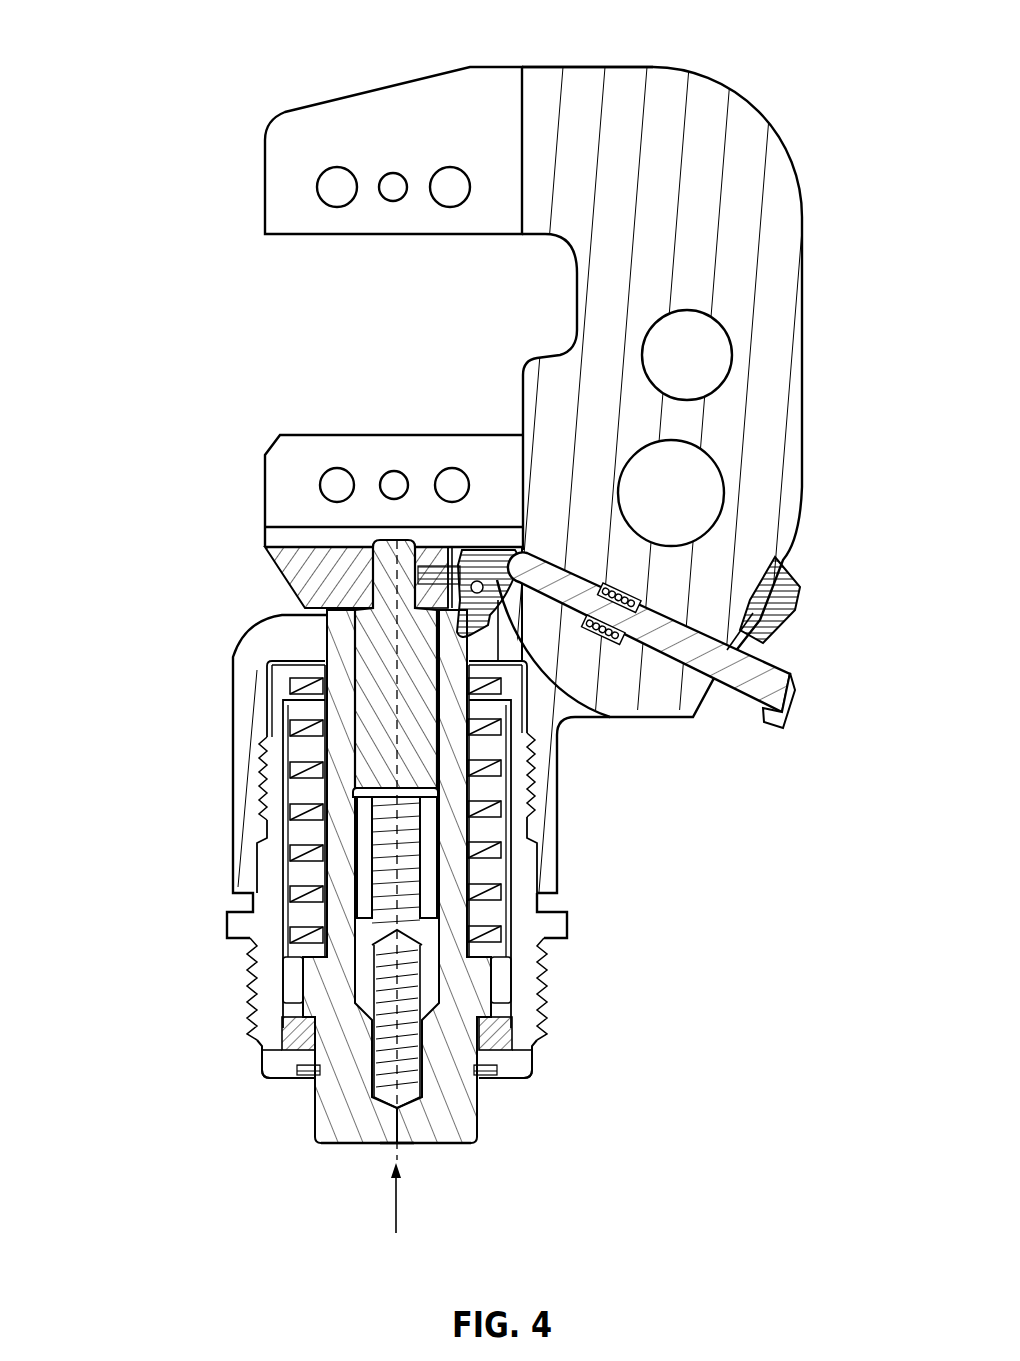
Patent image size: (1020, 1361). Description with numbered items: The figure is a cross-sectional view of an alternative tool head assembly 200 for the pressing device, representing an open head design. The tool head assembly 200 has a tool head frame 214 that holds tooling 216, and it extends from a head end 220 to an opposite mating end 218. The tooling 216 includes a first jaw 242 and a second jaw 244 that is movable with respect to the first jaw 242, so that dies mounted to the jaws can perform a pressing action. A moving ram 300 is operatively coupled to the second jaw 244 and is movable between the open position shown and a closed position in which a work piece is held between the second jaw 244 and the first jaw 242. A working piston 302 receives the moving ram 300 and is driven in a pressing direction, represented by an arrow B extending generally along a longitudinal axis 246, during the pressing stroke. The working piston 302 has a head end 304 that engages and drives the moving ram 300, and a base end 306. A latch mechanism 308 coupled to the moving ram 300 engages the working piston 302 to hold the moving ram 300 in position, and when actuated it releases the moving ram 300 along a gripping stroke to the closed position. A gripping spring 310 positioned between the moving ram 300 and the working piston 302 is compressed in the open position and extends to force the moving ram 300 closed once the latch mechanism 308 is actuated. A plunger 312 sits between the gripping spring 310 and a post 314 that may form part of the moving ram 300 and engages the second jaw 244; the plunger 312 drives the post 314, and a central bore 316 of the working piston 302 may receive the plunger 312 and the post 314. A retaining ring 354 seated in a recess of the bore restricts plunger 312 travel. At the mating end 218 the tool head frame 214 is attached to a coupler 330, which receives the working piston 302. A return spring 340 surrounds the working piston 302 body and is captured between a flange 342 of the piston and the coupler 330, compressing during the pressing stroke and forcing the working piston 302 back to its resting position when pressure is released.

The tool head assembly 200 is at (178, 97).
The tooling 216 is at (283, 62).
The head end 220 is at (618, 65).
The tool head frame 214 is at (748, 145).
The first jaw 242 is at (270, 213).
The second jaw 244 is at (275, 477).
The head end 304 is at (305, 590).
The post 314 is at (355, 630).
The moving ram 300 is at (340, 737).
The retaining ring 354 is at (355, 790).
The central bore 316 is at (355, 850).
The plunger 312 is at (388, 877).
The gripping spring 310 is at (382, 1055).
The longitudinal axis 246 is at (392, 1128).
The base end 306 is at (430, 1143).
The working piston 302 is at (462, 1122).
The coupler 330 is at (527, 983).
The flange 342 is at (537, 960).
The mating end 218 is at (547, 895).
The return spring 340 is at (527, 800).
The latch mechanism 308 is at (600, 708).
The arrow B is at (398, 1198).